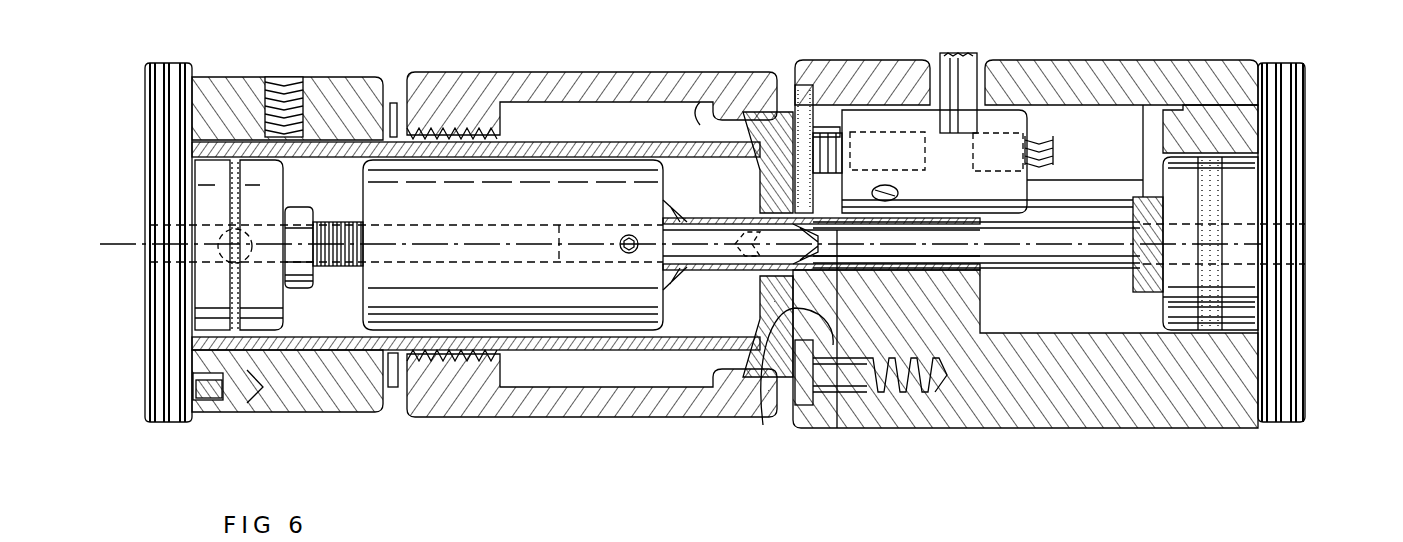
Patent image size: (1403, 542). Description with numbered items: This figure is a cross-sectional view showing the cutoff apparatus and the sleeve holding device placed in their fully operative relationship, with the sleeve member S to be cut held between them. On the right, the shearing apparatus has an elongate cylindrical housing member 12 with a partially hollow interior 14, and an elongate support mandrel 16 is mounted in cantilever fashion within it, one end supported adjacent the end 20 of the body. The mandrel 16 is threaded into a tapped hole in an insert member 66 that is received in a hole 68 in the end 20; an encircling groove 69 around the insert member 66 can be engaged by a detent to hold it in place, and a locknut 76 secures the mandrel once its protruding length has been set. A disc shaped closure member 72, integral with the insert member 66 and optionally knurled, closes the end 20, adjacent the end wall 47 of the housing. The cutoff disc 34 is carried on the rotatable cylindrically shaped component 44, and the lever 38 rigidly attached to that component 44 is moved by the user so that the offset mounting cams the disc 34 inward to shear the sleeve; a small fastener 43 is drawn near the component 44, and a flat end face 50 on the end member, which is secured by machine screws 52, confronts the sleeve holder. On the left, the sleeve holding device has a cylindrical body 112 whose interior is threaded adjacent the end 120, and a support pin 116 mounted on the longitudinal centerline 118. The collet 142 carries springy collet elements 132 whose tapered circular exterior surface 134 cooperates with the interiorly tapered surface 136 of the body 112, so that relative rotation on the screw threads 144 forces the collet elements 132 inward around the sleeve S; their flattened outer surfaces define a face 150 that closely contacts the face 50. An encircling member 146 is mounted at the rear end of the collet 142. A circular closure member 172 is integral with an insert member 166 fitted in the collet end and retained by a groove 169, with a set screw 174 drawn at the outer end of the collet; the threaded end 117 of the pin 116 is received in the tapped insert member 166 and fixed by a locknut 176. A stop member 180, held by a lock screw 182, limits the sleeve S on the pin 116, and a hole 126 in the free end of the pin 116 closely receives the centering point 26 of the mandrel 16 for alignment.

The housing member 12 is at (1080, 420).
The partially hollow interior 14 is at (1093, 123).
The support mandrel 16 is at (1023, 247).
The end of the body member 20 is at (1277, 422).
The centering point 26 is at (780, 244).
The cutoff disc 34 is at (843, 113).
The lever 38 is at (968, 55).
The arrow 43 is at (1052, 153).
The cylindrically shaped component 44 is at (1012, 122).
The end wall 47 is at (1153, 175).
The flat end face 50 is at (765, 425).
The machine screws 52 is at (892, 432).
The insert member 66 is at (1240, 198).
The hole 68 is at (1163, 300).
The encircling groove 69 is at (1210, 318).
The closure member 72 is at (1300, 392).
The locknut 76 is at (1143, 200).
The cylindrical body 112 is at (480, 403).
The support pin 116 is at (707, 262).
The threaded end 117 is at (330, 278).
The longitudinal centerline 118 is at (150, 244).
The end of the body member 120 is at (395, 410).
The hole 126 is at (737, 258).
The collet elements 132 is at (738, 85).
The tapered circular exterior surface 134 is at (783, 80).
The interiorly tapered surface 136 is at (700, 125).
The collet 142 is at (390, 390).
The screw threads 144 is at (408, 128).
The encircling member 146 is at (350, 72).
The face 150 is at (837, 420).
The insert member 166 is at (268, 308).
The groove 169 is at (243, 173).
The closure member 172 is at (160, 428).
The set screw 174 is at (204, 400).
The locknut 176 is at (300, 210).
The stop member 180 is at (500, 177).
The lock screw 182 is at (628, 257).
The sleeve member S is at (717, 247).